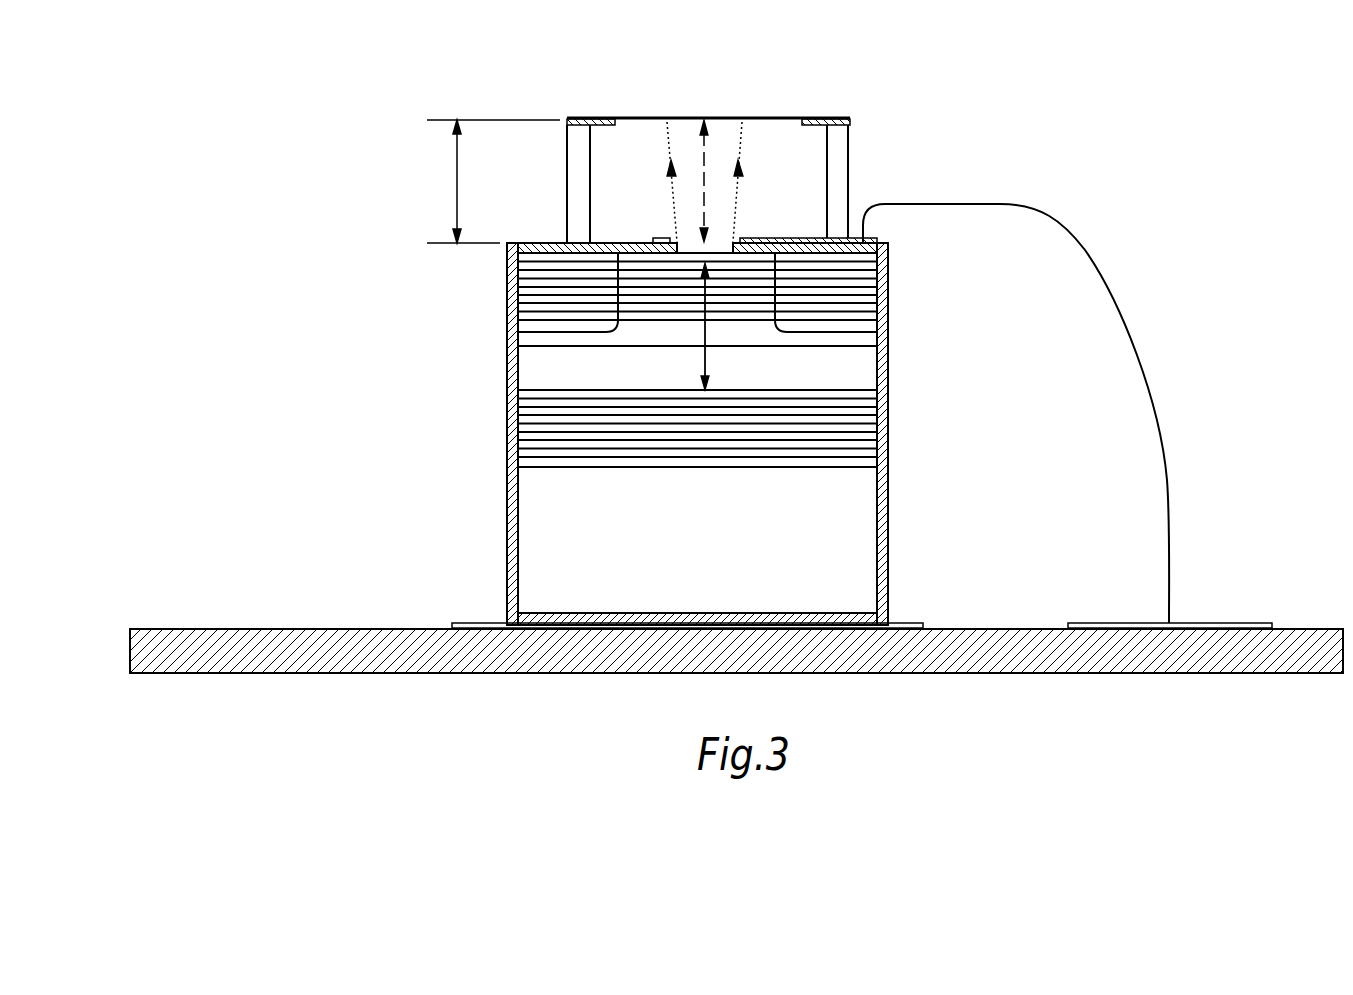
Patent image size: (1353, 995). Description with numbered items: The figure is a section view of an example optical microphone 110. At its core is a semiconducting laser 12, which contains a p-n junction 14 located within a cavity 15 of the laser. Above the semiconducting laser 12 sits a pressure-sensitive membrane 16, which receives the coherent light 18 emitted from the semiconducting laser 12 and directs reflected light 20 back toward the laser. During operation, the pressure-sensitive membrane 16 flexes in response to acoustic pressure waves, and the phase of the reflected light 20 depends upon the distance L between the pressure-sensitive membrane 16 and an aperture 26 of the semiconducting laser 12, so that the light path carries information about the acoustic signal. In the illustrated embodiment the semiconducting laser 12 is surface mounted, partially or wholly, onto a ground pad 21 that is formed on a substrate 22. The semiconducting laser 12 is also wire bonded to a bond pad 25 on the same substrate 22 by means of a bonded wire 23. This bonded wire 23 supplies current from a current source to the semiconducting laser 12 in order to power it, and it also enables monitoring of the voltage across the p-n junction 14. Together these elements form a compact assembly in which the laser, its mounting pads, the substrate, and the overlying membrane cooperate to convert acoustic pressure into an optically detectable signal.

The optical microphone 110 is at (330, 133).
The semiconducting laser 12 is at (507, 523).
The p-n junction 14 is at (460, 260).
The cavity 15 is at (533, 365).
The pressure-sensitive membrane 16 is at (748, 118).
The coherent light 18 is at (704, 126).
The reflected light 20 is at (712, 232).
The ground pad 21 is at (483, 623).
The substrate 22 is at (528, 673).
The bonded wire 23 is at (1063, 230).
The bond pad 25 is at (1225, 623).
The aperture 26 is at (678, 240).